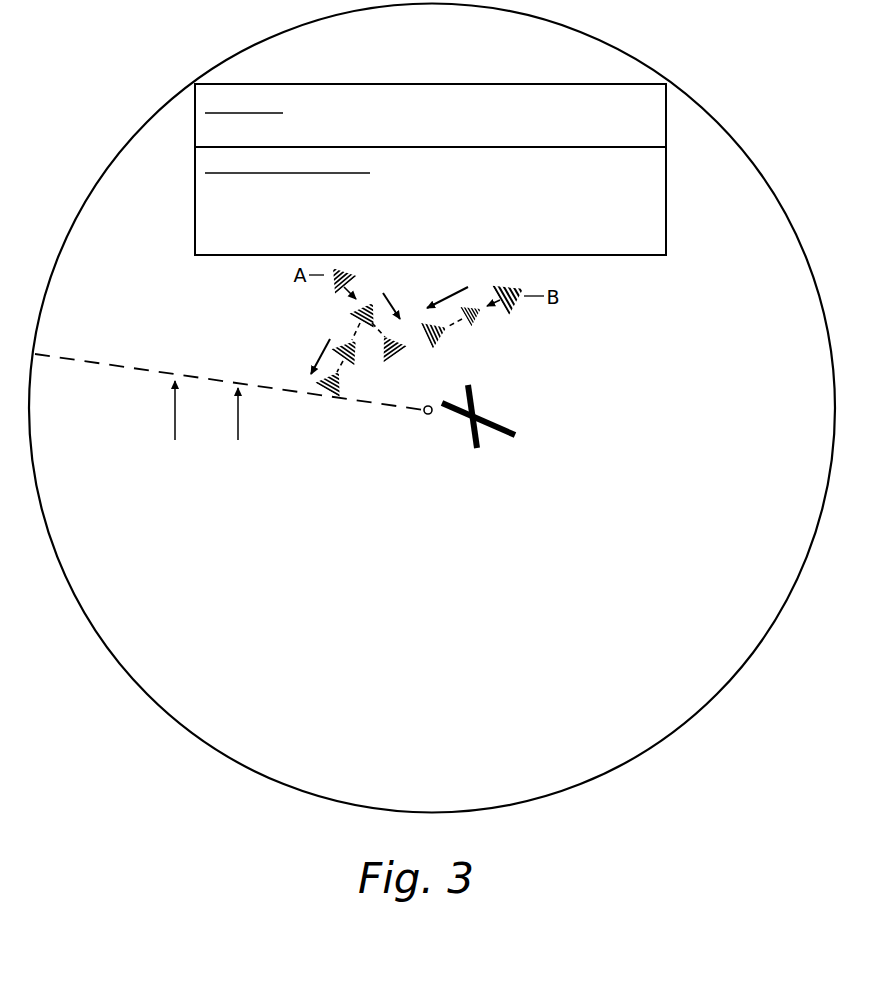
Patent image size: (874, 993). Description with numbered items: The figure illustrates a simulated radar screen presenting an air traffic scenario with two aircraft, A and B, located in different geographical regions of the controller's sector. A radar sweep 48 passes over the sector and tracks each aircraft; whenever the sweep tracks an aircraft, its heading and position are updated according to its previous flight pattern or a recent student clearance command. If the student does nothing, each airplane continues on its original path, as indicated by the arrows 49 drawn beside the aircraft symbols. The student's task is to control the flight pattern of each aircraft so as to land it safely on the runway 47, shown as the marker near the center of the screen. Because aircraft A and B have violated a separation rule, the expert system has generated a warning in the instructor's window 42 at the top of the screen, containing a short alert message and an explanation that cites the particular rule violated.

The instructor's window 42 is at (616, 256).
The runway 47 is at (508, 423).
The radar sweep 48 is at (370, 402).
The arrows 49 is at (455, 291).